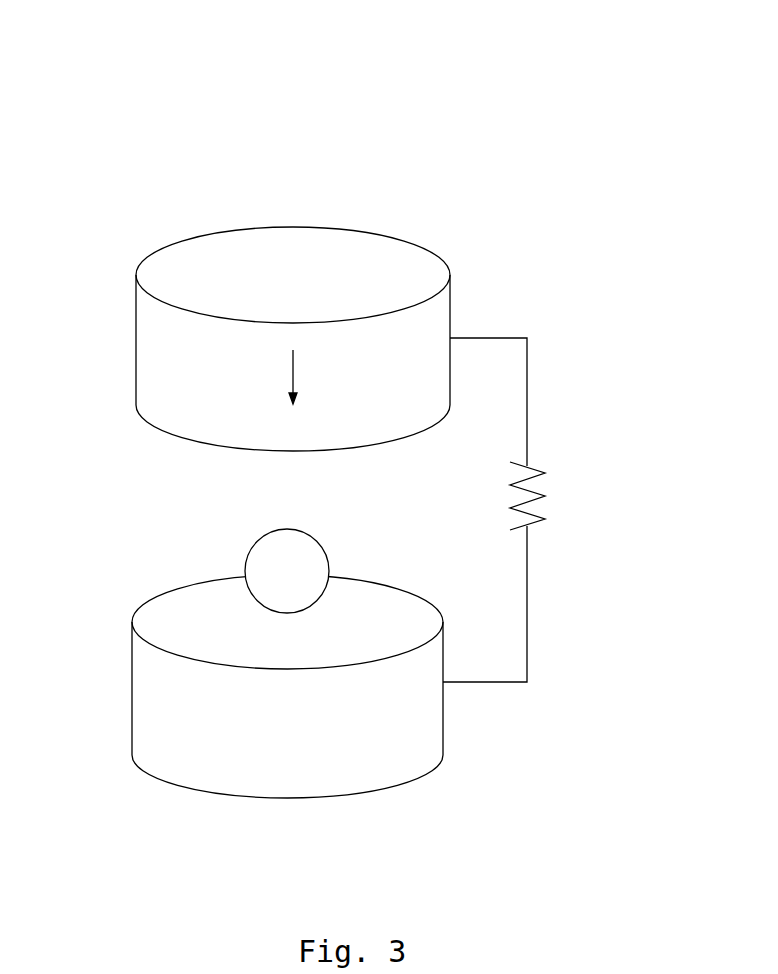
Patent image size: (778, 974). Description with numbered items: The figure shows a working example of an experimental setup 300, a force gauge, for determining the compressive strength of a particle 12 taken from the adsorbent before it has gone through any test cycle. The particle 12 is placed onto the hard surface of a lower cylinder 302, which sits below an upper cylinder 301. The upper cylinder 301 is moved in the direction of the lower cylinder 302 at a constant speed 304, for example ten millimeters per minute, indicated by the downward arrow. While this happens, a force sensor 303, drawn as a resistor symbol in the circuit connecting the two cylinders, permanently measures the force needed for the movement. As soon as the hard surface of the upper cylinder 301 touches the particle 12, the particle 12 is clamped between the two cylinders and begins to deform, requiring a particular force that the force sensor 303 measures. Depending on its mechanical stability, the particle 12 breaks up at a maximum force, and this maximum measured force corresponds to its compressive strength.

The experimental setup 300 is at (198, 93).
The upper cylinder 301 is at (136, 350).
The lower cylinder 302 is at (132, 695).
The force sensor 303 is at (555, 498).
The constant speed 304 is at (293, 373).
The particle 12 is at (240, 563).